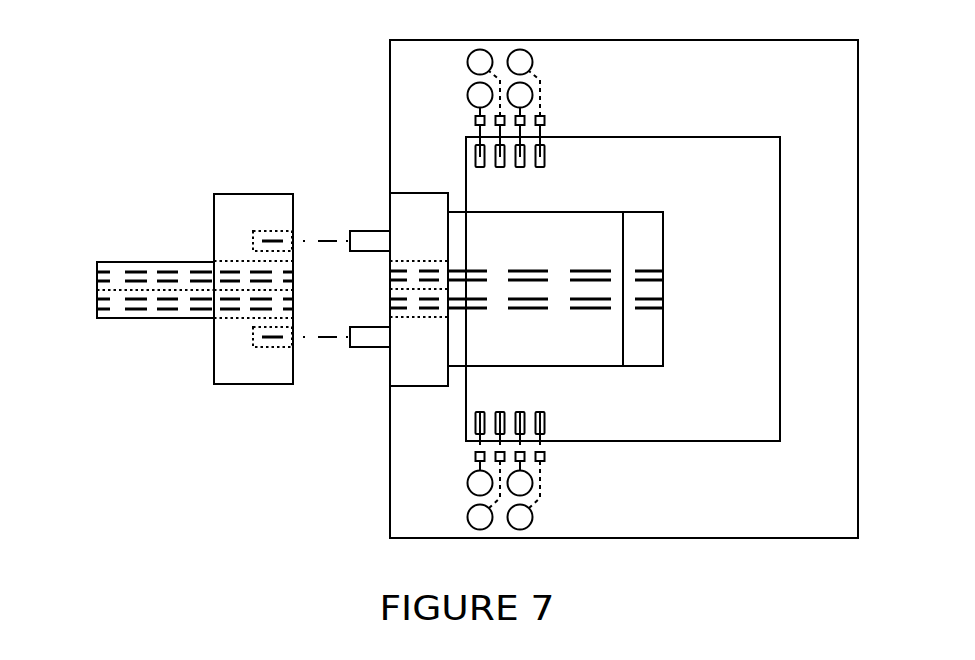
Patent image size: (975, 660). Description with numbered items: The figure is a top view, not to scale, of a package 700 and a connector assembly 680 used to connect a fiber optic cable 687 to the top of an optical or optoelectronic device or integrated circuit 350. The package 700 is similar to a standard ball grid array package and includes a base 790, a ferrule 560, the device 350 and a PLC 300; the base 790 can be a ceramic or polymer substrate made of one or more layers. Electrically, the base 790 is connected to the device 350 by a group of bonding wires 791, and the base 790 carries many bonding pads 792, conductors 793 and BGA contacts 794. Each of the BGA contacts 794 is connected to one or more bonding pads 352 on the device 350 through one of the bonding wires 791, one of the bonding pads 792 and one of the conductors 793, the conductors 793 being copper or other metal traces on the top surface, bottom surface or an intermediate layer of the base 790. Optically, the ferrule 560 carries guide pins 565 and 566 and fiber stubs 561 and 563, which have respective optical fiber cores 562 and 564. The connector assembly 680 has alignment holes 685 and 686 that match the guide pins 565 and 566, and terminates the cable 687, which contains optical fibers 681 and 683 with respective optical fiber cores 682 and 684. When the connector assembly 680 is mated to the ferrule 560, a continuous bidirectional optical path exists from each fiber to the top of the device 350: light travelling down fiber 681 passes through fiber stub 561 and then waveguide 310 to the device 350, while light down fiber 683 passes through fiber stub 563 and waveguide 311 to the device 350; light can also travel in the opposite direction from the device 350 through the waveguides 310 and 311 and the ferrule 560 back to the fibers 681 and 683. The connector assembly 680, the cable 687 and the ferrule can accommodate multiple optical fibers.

The package 700 is at (318, 500).
The base 790 is at (631, 497).
The device 350 is at (631, 425).
The PLC 300 is at (586, 289).
The waveguide 311 is at (600, 275).
The waveguide 310 is at (602, 303).
The bonding pads 352 is at (570, 171).
The bonding wires 791 is at (580, 140).
The bonding pads 792 is at (565, 120).
The conductors 793 is at (555, 92).
The BGA contacts 794 is at (552, 70).
The ferrule 560 is at (412, 263).
The fiber stub 563 is at (432, 259).
The optical fiber core 564 is at (434, 274).
The optical fiber core 562 is at (432, 305).
The fiber stub 561 is at (428, 320).
The guide pin 566 is at (375, 230).
The guide pin 565 is at (370, 348).
The connector assembly 680 is at (213, 265).
The alignment hole 686 is at (270, 231).
The alignment hole 685 is at (268, 348).
The cable 687 is at (119, 261).
The optical fiber core 684 is at (130, 276).
The optical fiber 683 is at (183, 262).
The optical fiber core 682 is at (128, 304).
The optical fiber 681 is at (185, 320).